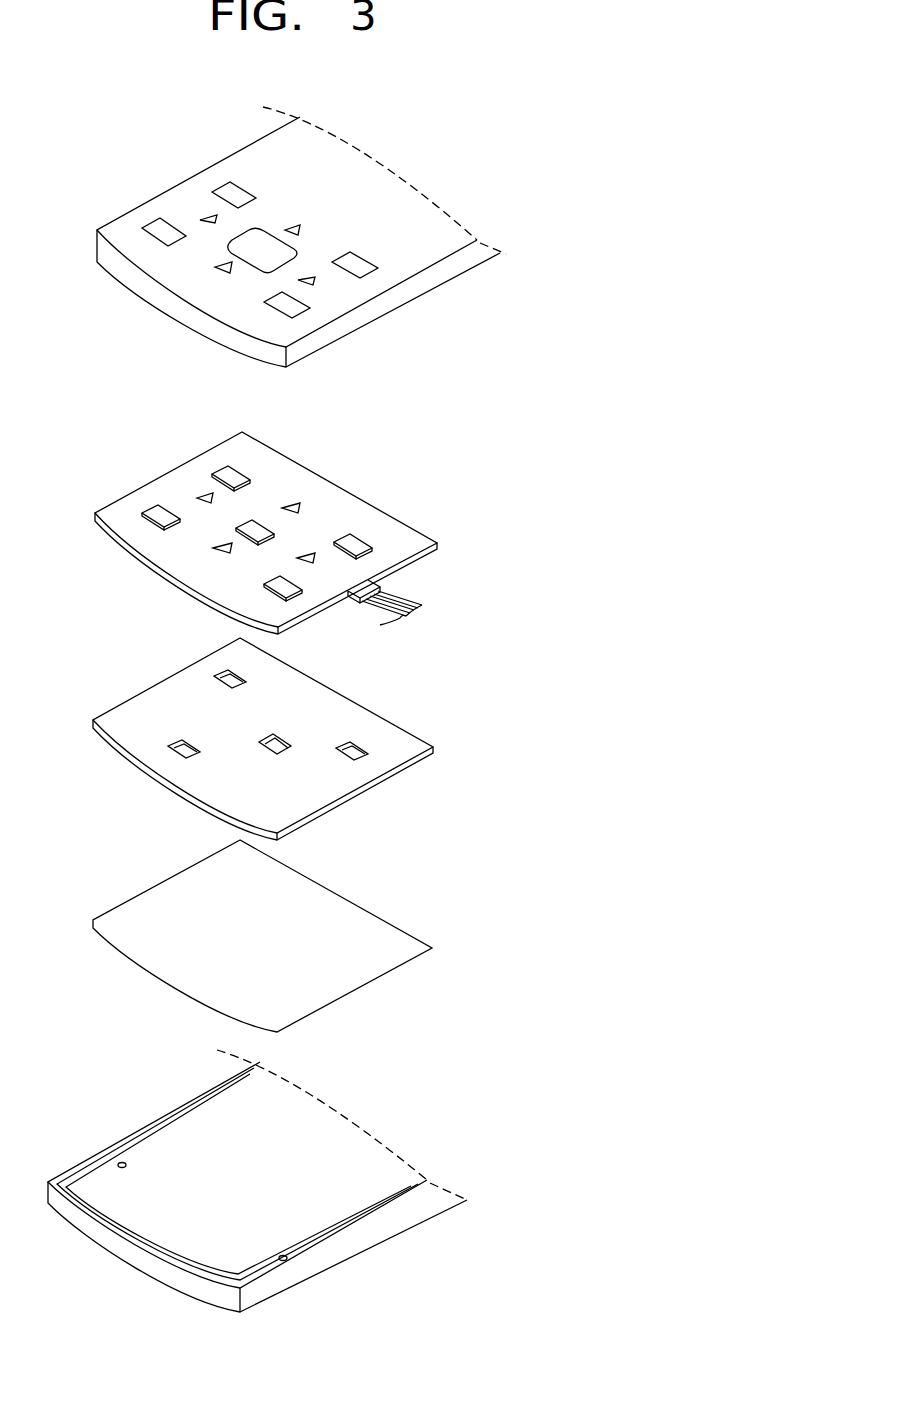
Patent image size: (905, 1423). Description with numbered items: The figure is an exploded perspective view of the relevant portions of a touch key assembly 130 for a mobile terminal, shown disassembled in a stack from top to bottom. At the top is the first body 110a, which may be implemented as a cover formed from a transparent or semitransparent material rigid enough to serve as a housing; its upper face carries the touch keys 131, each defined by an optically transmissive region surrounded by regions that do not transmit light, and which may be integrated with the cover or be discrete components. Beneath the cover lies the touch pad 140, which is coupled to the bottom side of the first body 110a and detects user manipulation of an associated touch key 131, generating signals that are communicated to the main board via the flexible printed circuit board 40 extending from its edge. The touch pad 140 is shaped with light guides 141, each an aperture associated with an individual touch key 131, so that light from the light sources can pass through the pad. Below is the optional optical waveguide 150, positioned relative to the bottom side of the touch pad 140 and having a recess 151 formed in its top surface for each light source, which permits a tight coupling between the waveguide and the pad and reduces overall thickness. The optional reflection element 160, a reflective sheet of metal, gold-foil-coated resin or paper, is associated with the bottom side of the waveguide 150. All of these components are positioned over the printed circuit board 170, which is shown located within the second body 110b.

The touch key assembly 130 is at (466, 166).
The touch keys 131 is at (165, 235).
The first body 110a is at (407, 295).
The touch pad 140 is at (293, 480).
The light guides 141 is at (203, 495).
The flexible printed circuit board 40 is at (398, 597).
The optical waveguide 150 is at (300, 802).
The recess 151 is at (177, 742).
The reflection element 160 is at (350, 972).
The printed circuit board 170 is at (168, 1143).
The second body 110b is at (360, 1240).